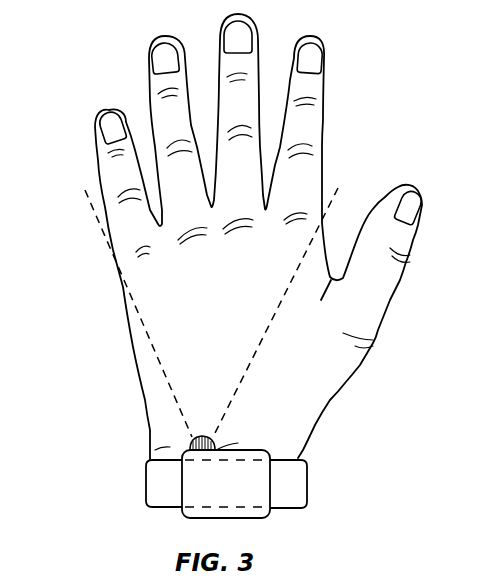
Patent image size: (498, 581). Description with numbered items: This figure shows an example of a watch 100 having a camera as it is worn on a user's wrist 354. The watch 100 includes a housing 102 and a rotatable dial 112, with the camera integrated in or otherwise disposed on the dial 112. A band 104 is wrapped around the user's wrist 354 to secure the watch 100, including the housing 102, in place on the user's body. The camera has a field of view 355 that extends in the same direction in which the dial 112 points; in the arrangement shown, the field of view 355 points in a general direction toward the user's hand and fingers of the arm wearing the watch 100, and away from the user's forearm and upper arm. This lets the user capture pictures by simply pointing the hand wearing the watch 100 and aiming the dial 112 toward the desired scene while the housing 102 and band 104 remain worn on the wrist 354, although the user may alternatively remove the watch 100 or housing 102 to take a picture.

The watch 100 is at (299, 485).
The housing 102 is at (266, 471).
The band 104 is at (157, 488).
The rotatable dial 112 is at (216, 447).
The user's wrist 354 is at (152, 426).
The field of view 355 is at (246, 376).